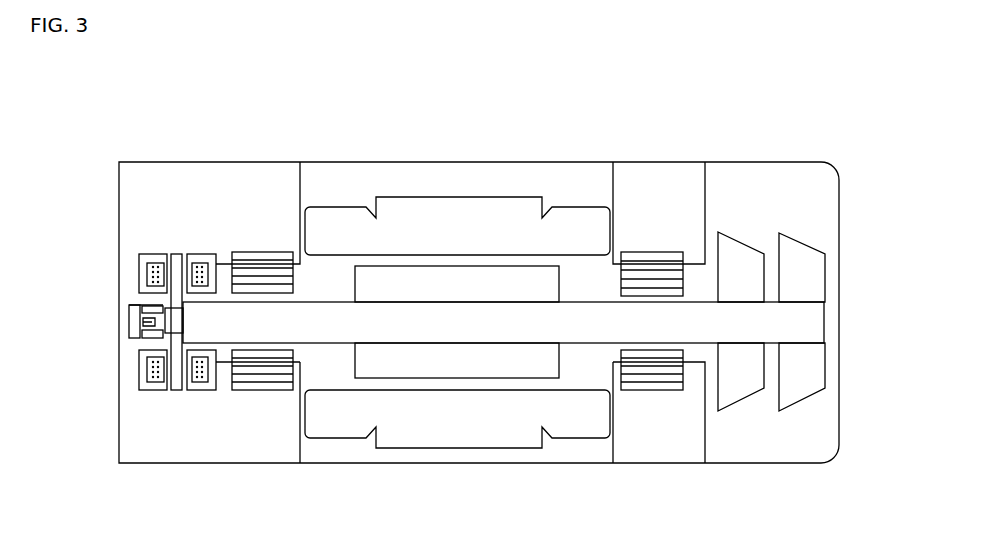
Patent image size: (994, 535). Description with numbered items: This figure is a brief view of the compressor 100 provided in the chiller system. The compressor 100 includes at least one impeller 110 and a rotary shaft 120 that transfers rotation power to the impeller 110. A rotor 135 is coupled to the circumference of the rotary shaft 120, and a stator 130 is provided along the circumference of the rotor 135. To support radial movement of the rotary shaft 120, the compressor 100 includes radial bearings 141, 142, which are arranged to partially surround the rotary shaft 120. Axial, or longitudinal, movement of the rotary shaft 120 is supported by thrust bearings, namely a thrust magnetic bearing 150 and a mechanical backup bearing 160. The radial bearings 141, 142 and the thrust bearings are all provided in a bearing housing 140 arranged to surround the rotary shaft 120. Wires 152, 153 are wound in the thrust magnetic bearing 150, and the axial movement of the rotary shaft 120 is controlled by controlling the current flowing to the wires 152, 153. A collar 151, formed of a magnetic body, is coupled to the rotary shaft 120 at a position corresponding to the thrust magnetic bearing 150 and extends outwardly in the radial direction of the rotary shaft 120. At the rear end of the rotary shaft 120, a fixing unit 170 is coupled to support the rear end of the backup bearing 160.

The compressor 100 is at (320, 136).
The impeller 110 is at (732, 255).
The rotary shaft 120 is at (470, 317).
The stator 130 is at (435, 438).
The rotor 135 is at (507, 368).
The bearing housing 140 is at (285, 445).
The radial bearing 141 is at (652, 378).
The radial bearing 142 is at (260, 378).
The thrust magnetic bearing 150 is at (170, 250).
The collar 151 is at (178, 388).
The wire 152 is at (200, 266).
The wire 153 is at (155, 266).
The mechanical backup bearing 160 is at (136, 301).
The fixing unit 170 is at (135, 320).